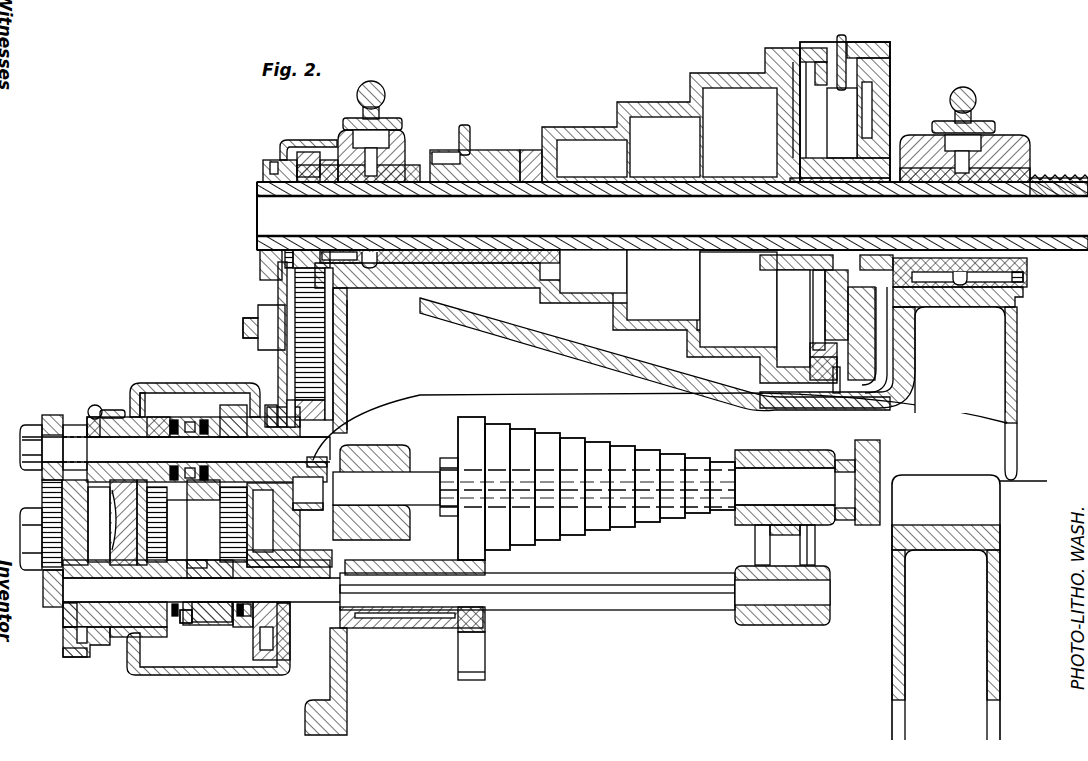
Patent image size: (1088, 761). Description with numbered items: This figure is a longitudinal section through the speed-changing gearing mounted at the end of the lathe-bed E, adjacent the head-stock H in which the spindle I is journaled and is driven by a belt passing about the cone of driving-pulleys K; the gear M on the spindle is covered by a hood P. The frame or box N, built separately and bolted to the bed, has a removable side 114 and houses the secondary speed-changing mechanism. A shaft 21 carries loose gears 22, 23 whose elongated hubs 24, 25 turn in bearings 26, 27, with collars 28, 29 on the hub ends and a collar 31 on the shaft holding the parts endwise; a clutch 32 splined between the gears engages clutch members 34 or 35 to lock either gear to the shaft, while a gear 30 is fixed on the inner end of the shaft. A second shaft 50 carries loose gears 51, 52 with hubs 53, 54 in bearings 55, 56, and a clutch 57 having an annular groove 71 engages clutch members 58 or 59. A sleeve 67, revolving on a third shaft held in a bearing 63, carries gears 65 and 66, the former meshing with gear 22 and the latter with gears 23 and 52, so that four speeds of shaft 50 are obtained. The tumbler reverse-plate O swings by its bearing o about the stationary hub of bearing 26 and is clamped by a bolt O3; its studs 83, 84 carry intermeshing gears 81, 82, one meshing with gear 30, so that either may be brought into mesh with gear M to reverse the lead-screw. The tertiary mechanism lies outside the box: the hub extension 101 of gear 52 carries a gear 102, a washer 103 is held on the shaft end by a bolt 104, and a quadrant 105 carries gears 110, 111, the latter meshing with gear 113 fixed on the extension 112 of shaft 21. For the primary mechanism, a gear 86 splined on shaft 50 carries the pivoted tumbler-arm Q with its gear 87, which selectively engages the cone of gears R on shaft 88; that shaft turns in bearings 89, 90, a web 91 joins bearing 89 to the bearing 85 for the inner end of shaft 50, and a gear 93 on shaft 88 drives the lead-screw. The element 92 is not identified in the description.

The spindle I is at (262, 212).
The hood P is at (283, 140).
The gear on the spindle M is at (310, 152).
The cone of driving-pulleys K is at (633, 92).
The tumbler reverse-plate O is at (278, 290).
The bolt O3 is at (283, 258).
The bearing o is at (290, 405).
The gear 22 is at (267, 344).
The frame or box N is at (175, 383).
The gear 30 is at (347, 392).
The gear 81 is at (348, 310).
The gear 82 is at (350, 368).
The stud 83 is at (256, 320).
The stud 84 is at (247, 328).
The bearing 26 is at (270, 400).
The head-stock H is at (517, 335).
The shaft 21 is at (176, 449).
The elongated hub 24 is at (298, 440).
The gear 23 is at (163, 417).
The clutch 32 is at (203, 418).
The bearing 27 is at (110, 408).
The removable side 114 is at (145, 383).
The collar 29 is at (95, 405).
The elongated hub 25 is at (122, 412).
The gear 113 is at (50, 416).
The shaft extension 112 is at (32, 428).
The collar 31 is at (73, 428).
The gear 111 is at (43, 505).
The gear 110 is at (74, 503).
The quadrant 105 is at (112, 522).
The gear 66 is at (162, 522).
The clutch members 35 is at (177, 485).
The clutch members 34 is at (220, 484).
The gear 65 is at (232, 516).
The bearing 63 is at (185, 548).
The sleeve 67 is at (230, 547).
The collar 28 is at (300, 510).
The gear 51 is at (297, 558).
The washer 103 is at (50, 578).
The hub extension 101 is at (63, 610).
The bolt 104 is at (55, 606).
The gear 102 is at (66, 652).
The elongated hub 54 is at (120, 600).
The bearing 56 is at (120, 632).
The gear 52 is at (150, 630).
The clutch members 59 is at (183, 622).
The clutch 57 is at (215, 623).
The clutch members 58 is at (245, 622).
The annular groove 71 is at (208, 639).
The bearing 55 is at (300, 628).
The elongated hub 53 is at (312, 578).
The shaft 50 is at (597, 605).
The tumbler-arm Q is at (425, 620).
The gear 86 is at (485, 625).
The gear 87 is at (485, 650).
The lathe-bed E is at (350, 690).
The bearing 90 is at (408, 447).
The bearing 92 is at (410, 530).
The cone of gears R is at (628, 448).
The bearing 89 is at (782, 458).
The shaft 88 is at (750, 527).
The web 91 is at (812, 550).
The bearing 85 is at (790, 622).
The gear 93 is at (878, 448).